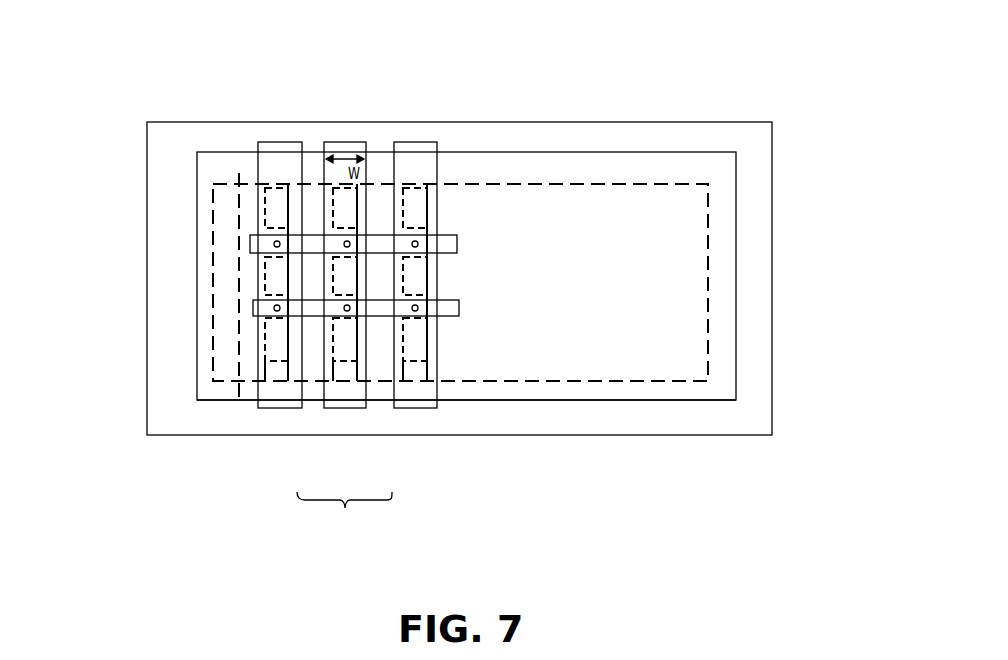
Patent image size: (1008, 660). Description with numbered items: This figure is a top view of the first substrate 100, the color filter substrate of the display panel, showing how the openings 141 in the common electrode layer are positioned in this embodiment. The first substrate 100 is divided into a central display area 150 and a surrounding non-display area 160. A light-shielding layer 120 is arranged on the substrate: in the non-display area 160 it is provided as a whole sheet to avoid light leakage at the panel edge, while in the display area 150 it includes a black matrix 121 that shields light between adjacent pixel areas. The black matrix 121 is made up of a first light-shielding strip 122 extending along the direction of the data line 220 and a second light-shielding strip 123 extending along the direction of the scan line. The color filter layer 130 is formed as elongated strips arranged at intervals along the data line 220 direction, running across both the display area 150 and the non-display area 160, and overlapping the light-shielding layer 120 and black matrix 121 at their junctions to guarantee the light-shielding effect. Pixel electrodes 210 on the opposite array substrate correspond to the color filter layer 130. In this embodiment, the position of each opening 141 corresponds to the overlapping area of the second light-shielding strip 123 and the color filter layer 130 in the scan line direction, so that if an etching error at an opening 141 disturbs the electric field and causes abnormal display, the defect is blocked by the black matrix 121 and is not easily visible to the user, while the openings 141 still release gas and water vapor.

The first substrate 100 is at (638, 99).
The non-display area 160 is at (752, 328).
The display area 150 is at (708, 240).
The data line 220 is at (237, 312).
The color filter layer 130 is at (437, 142).
The pixel electrode 210 is at (258, 188).
The first light-shielding strip 122 is at (315, 380).
The second light-shielding strip 123 is at (382, 309).
The black matrix 121 is at (344, 519).
The opening 141 is at (258, 243).
The light-shielding layer 120 is at (465, 396).